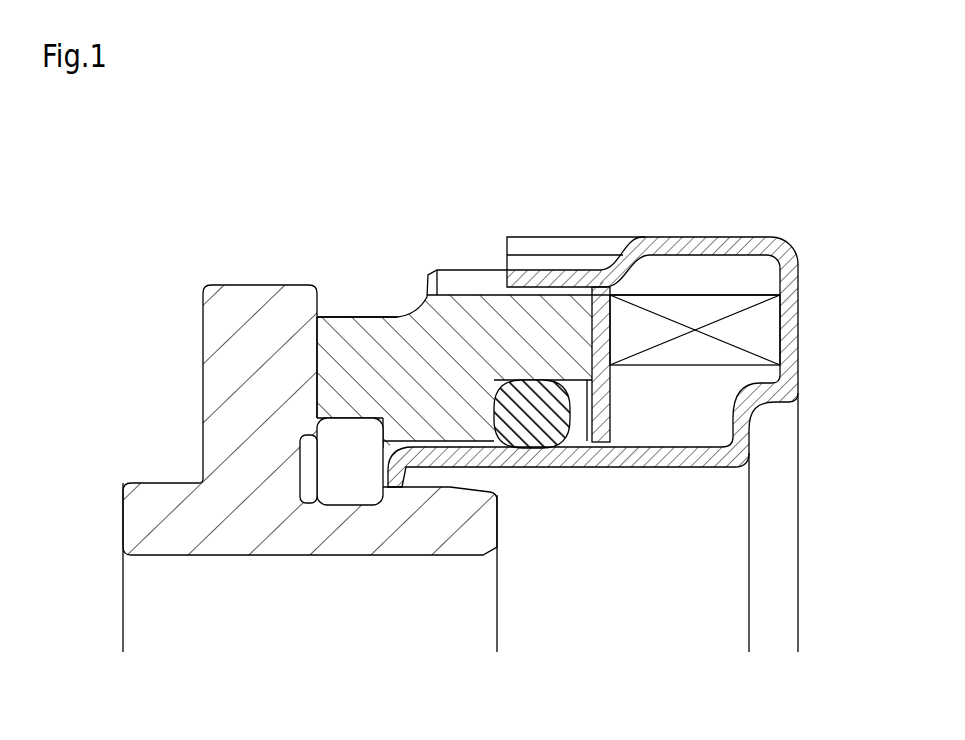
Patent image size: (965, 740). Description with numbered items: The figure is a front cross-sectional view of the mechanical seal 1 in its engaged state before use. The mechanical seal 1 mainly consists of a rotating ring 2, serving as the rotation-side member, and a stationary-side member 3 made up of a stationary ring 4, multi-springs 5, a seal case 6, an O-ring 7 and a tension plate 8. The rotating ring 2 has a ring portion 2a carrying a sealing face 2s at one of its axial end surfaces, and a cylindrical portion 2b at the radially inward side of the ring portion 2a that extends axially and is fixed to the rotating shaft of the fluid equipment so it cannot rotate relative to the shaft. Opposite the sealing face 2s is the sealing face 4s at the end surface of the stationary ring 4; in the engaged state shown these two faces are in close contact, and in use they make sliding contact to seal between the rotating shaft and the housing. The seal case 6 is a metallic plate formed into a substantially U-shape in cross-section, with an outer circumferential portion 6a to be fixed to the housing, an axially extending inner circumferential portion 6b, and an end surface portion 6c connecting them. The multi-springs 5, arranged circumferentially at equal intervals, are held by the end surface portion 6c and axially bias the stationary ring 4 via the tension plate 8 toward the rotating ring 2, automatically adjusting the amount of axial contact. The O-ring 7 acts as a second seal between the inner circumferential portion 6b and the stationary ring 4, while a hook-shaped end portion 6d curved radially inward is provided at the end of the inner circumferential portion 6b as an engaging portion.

The mechanical seal 1 is at (780, 155).
The rotating ring 2 is at (285, 468).
The ring portion 2a is at (220, 362).
The cylindrical portion 2b is at (230, 532).
The sealing face 2s is at (317, 360).
The stationary-side member 3 is at (546, 211).
The stationary ring 4 is at (531, 329).
The sealing face 4s is at (317, 330).
The multi-springs 5 is at (688, 315).
The seal case 6 is at (653, 426).
The outer circumferential portion 6a is at (723, 242).
The inner circumferential portion 6b is at (653, 458).
The end surface portion 6c is at (796, 317).
The end portion 6d is at (405, 463).
The O-ring 7 is at (540, 428).
The tension plate 8 is at (600, 313).